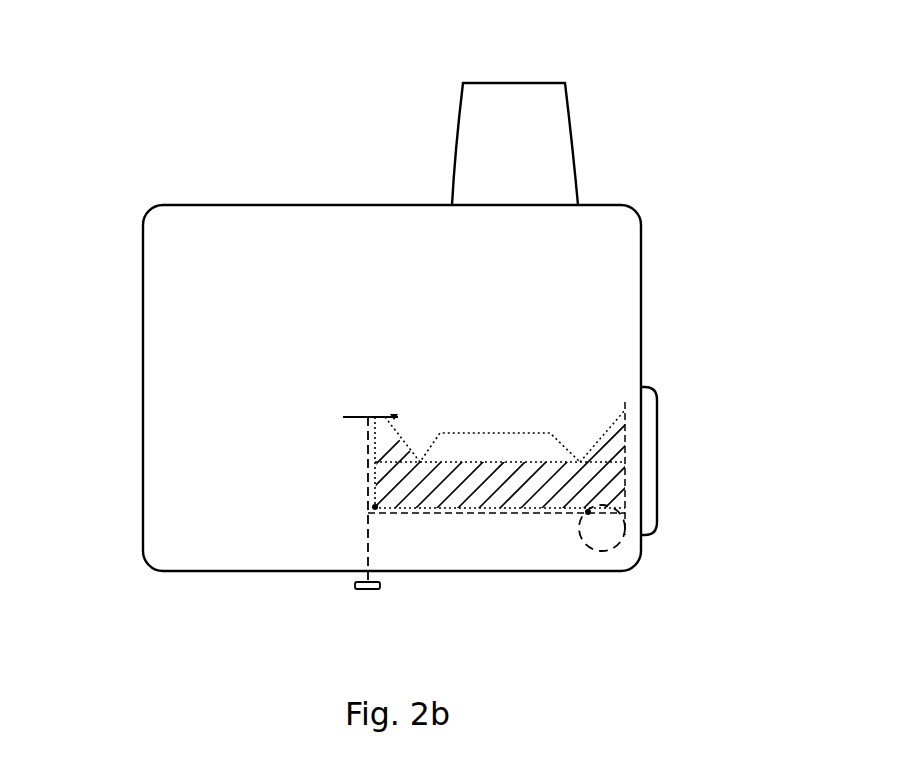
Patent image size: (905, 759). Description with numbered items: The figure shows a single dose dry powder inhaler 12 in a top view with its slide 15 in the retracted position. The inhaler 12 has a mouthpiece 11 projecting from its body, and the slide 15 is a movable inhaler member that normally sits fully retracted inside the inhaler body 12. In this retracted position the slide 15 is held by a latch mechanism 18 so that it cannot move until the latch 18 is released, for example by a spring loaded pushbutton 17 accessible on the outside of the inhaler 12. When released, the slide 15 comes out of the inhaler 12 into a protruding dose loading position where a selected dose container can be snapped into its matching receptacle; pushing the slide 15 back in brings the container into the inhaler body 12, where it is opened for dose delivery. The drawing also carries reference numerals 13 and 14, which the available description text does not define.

The mouthpiece 11 is at (525, 147).
The inhaler 12 is at (528, 305).
The outlet opening 13 is at (607, 537).
The filling material 14 is at (463, 513).
The slide 15 is at (627, 400).
The spring loaded pushbutton 17 is at (355, 585).
The latch mechanism 18 is at (343, 417).